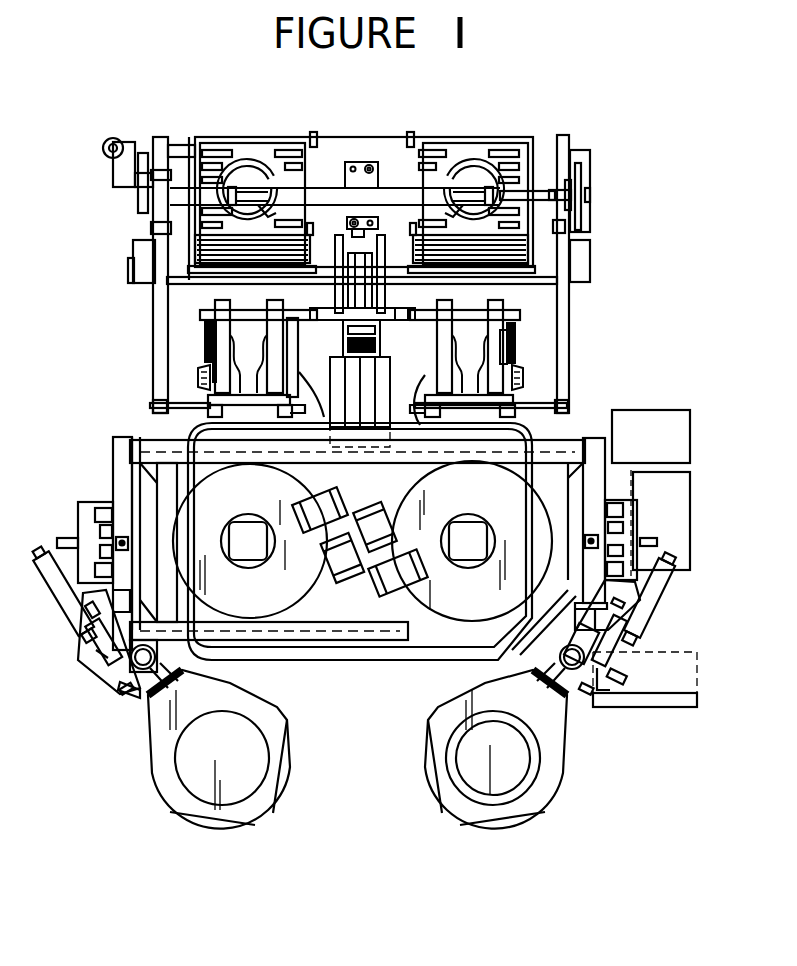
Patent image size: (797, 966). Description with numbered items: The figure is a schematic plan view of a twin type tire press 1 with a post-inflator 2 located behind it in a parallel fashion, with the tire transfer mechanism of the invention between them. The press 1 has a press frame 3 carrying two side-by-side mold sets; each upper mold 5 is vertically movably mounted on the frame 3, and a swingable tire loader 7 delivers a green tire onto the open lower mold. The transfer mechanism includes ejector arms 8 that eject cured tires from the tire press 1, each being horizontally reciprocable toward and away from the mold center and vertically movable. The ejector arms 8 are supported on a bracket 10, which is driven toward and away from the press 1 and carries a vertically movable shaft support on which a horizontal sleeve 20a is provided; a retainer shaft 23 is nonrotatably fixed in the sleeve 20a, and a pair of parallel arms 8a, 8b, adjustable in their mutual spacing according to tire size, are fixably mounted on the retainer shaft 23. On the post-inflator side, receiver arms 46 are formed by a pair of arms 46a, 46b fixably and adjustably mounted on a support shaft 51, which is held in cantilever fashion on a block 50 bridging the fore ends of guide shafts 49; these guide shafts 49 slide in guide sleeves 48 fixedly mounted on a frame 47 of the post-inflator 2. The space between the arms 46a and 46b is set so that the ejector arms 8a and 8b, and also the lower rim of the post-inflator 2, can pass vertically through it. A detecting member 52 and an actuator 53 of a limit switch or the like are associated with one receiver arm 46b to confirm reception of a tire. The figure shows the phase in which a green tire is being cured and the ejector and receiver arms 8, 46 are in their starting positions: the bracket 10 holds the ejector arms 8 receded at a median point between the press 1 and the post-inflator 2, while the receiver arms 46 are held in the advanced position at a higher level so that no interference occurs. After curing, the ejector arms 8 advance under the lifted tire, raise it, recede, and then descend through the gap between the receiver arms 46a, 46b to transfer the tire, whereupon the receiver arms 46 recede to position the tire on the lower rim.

The tire press 1 is at (375, 658).
The post-inflator 2 is at (548, 258).
The press frame 3 is at (598, 456).
The upper mold 5 is at (300, 605).
The tire loader 7 is at (165, 746).
The ejector arms 8 is at (222, 314).
The ejector arm 8a is at (283, 370).
The ejector arm 8b is at (228, 335).
The bracket 10 is at (352, 346).
The horizontal sleeve 20a is at (392, 310).
The retainer shaft 23 is at (420, 313).
The receiver arms 46 is at (196, 375).
The receiver arm 46a is at (425, 370).
The receiver arm 46b is at (205, 366).
The frame 47 is at (579, 178).
The guide sleeves 48 is at (160, 228).
The guide shafts 49 is at (156, 302).
The block 50 is at (157, 406).
The support shaft 51 is at (205, 428).
The detecting member 52 is at (200, 395).
The actuator 53 is at (212, 360).